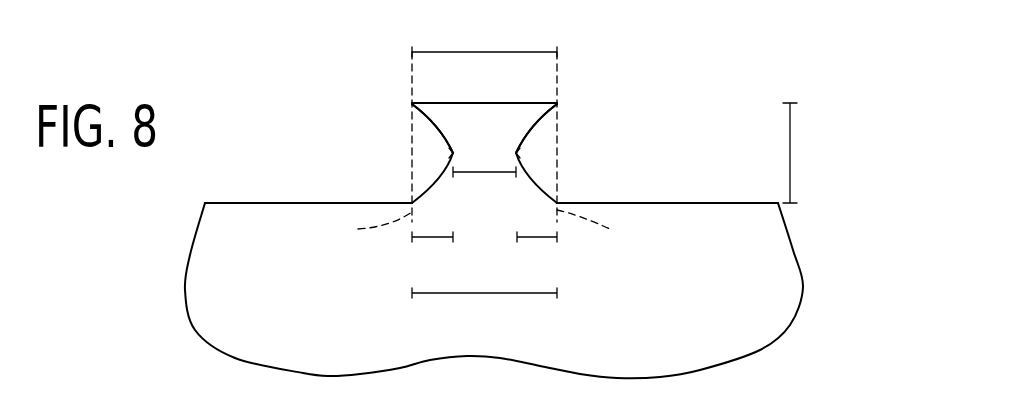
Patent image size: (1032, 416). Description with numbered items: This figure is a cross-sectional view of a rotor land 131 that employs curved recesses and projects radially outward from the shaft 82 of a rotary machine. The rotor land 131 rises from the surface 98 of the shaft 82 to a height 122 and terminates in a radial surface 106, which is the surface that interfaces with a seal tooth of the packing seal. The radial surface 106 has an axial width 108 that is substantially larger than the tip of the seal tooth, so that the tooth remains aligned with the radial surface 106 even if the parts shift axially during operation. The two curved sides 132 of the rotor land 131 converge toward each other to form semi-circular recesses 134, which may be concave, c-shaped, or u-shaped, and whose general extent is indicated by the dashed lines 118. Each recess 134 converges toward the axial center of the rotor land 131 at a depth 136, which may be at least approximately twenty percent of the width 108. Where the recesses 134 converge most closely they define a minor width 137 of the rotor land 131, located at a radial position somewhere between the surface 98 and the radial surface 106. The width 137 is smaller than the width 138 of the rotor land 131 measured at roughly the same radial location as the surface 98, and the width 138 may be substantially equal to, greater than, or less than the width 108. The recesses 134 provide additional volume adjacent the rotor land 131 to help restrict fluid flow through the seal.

The shaft 82 is at (793, 250).
The surface of the shaft 98 is at (667, 203).
The radial surface 106 is at (540, 100).
The width of the radial surface 108 is at (487, 52).
The dashed lines 118 is at (486, 228).
The height 122 is at (790, 153).
The rotor land 131 is at (503, 142).
The curved sides 132 is at (433, 125).
The semi-circular recesses 134 is at (433, 153).
The depth 136 is at (430, 240).
The width of the rotor land 137 is at (492, 173).
The width of the rotor land at the shaft surface 138 is at (485, 295).